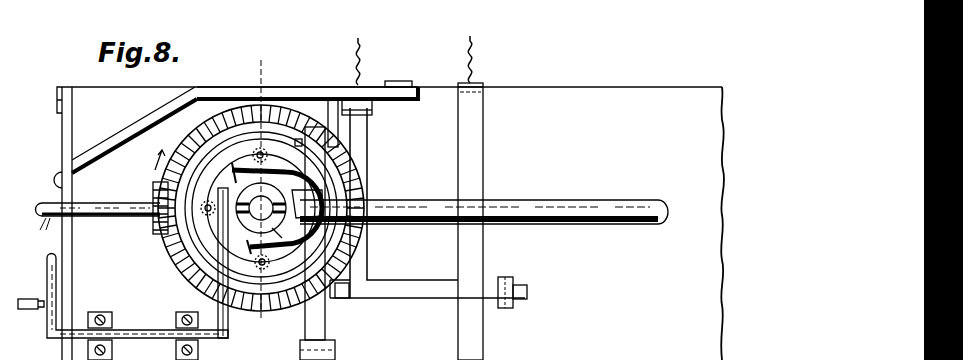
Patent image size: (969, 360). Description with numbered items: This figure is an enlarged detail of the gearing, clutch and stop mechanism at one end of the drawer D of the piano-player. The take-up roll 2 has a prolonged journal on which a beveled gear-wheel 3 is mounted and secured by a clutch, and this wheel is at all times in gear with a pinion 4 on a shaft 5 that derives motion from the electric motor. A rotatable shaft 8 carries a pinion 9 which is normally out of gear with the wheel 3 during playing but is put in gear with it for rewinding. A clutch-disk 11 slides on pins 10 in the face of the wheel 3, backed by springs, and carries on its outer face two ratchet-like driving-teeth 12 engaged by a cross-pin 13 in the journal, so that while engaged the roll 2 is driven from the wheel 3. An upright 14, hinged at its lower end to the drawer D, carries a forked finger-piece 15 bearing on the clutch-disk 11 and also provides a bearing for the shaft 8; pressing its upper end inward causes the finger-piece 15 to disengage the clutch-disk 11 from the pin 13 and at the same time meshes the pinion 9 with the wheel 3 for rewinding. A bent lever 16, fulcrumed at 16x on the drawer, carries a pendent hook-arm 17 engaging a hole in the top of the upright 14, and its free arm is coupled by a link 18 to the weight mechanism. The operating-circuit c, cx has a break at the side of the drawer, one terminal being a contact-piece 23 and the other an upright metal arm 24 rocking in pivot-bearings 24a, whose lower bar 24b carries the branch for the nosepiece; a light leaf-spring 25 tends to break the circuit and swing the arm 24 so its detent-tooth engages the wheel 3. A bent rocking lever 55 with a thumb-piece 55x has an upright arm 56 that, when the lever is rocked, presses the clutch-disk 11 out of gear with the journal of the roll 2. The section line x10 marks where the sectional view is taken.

The take-up roll 2 is at (261, 208).
The beveled gear-wheel 3 is at (205, 125).
The pinion 4 is at (153, 225).
The shaft 5 is at (116, 203).
The rotatable shaft 8 is at (560, 200).
The pinion 9 is at (367, 190).
The pins 10 is at (266, 155).
The clutch-disk 11 is at (185, 262).
The ratchet-like driving-teeth 12 is at (277, 208).
The cross-pin 13 is at (307, 204).
The upright 14 is at (325, 318).
The forked finger-piece 15 is at (281, 240).
The lever 16 is at (290, 87).
The fulcrum 16x is at (398, 81).
The pendent hook-arm 17 is at (338, 128).
The link 18 is at (50, 176).
The contact-piece 23 is at (372, 110).
The upright metal arm 24 is at (367, 162).
The pivot-bearings 24a is at (349, 290).
The lower bar 24b is at (433, 298).
The leaf-spring 25 is at (483, 136).
The bent rocking lever 55 is at (47, 278).
The arm or thumb-piece 55x is at (44, 310).
The upright arm 56 is at (200, 288).
The operating-circuit c is at (365, 58).
The operating-circuit cx is at (482, 56).
The drawer D is at (616, 113).
The section line x10 is at (226, 72).